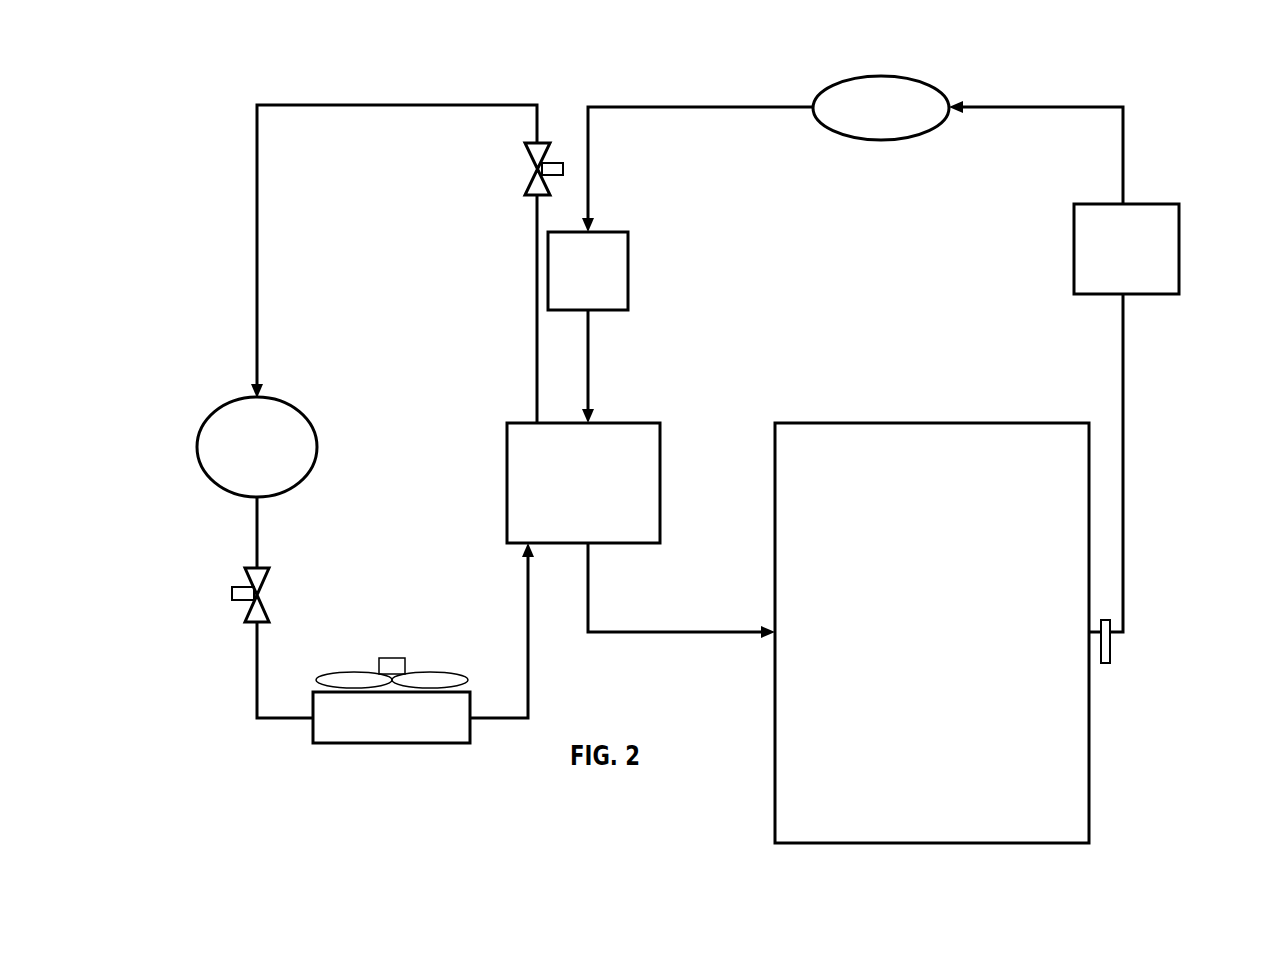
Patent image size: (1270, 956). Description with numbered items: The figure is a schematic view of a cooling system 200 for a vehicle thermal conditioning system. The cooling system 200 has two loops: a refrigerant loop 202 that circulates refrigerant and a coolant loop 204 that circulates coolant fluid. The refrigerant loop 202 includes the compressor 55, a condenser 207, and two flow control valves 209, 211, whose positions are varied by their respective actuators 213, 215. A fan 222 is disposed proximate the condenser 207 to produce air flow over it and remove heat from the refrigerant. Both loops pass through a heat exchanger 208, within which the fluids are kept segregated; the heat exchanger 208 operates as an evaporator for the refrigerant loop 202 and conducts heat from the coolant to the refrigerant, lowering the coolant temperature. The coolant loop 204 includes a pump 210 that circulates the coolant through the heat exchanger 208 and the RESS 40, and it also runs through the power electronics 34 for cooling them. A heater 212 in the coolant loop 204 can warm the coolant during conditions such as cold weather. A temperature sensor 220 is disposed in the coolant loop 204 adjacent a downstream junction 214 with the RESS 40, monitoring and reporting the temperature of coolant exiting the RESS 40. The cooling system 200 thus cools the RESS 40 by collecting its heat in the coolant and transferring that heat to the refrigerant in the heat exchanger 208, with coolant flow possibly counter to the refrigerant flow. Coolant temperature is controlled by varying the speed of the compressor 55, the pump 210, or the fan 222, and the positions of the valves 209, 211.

The cooling system 200 is at (694, 98).
The refrigerant loop 202 is at (356, 106).
The coolant loop 204 is at (1126, 390).
The condenser 207 is at (407, 733).
The heat exchanger 208 is at (590, 502).
The valve 209 is at (266, 582).
The pump 210 is at (896, 124).
The valve 211 is at (528, 183).
The heater 212 is at (604, 287).
The actuator 213 is at (232, 593).
The downstream junction 214 is at (1089, 642).
The actuator 215 is at (550, 163).
The temperature sensor 220 is at (1110, 641).
The fan 222 is at (398, 658).
The power electronics 34 is at (1139, 268).
The RESS 40 is at (938, 580).
The compressor 55 is at (270, 463).